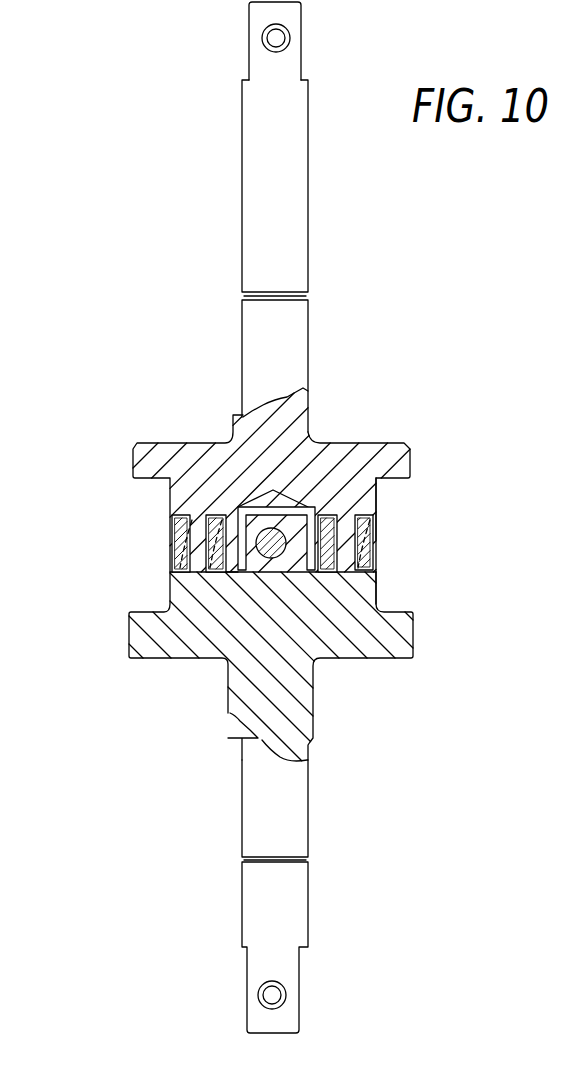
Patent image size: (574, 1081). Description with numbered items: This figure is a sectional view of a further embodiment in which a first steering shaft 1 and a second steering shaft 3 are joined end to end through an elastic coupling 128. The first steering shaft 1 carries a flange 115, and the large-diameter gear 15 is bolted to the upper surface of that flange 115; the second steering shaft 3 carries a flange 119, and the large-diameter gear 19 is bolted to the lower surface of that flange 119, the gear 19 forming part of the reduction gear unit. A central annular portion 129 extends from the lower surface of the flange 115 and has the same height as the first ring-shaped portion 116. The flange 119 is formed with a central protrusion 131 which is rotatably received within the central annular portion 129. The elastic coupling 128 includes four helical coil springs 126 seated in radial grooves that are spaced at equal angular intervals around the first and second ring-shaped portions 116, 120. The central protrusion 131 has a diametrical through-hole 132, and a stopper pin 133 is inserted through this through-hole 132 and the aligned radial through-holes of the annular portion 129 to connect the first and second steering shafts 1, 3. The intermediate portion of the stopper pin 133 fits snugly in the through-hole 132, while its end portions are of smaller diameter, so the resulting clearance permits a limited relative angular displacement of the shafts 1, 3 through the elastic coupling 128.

The first steering shaft 1 is at (316, 339).
The second steering shaft 3 is at (318, 828).
The large-diameter gear 15 is at (344, 458).
The large-diameter gear 19 is at (386, 652).
The flange 115 is at (362, 494).
The first ring-shaped portion 116 is at (176, 542).
The flange 119 is at (372, 592).
The second ring-shaped portion 120 is at (208, 560).
The helical coil springs 126 is at (168, 528).
The elastic coupling 128 is at (244, 534).
The central annular portion 129 is at (238, 572).
The central protrusion 131 is at (300, 534).
The through-hole 132 is at (285, 545).
The stopper pin 133 is at (266, 550).